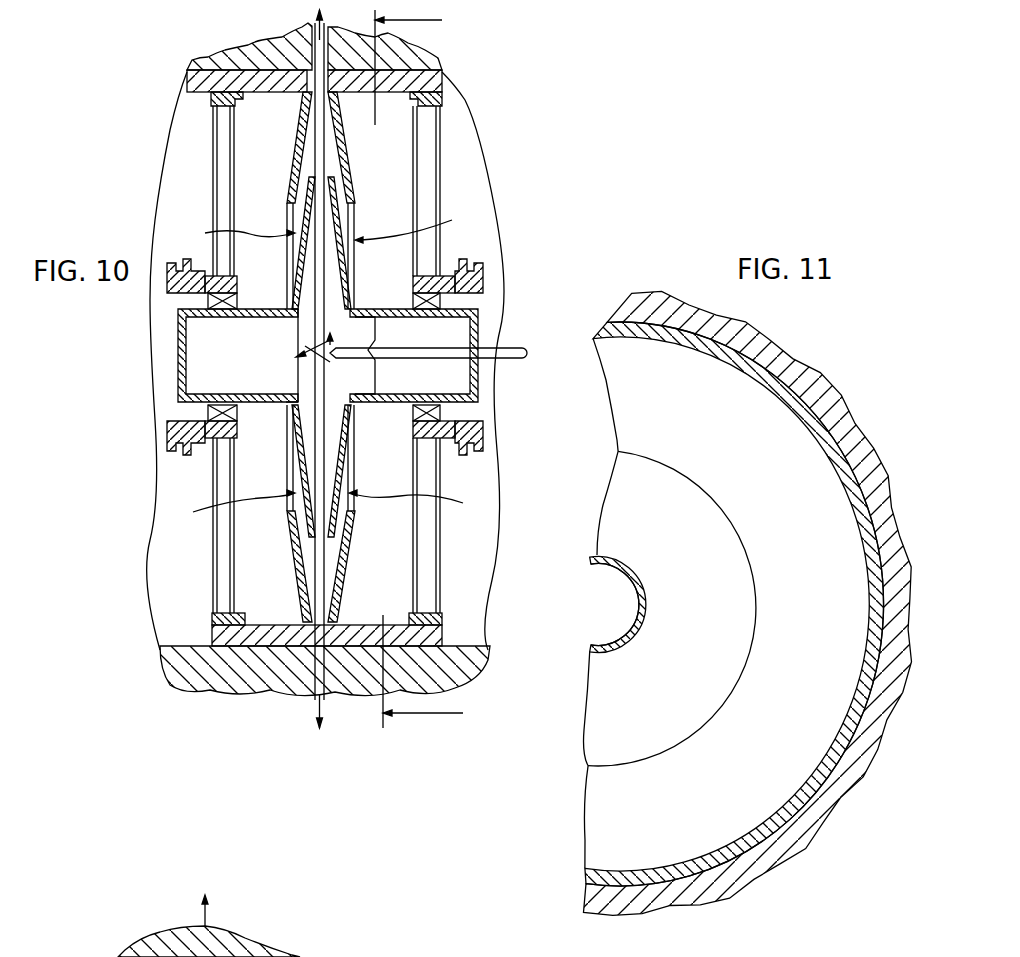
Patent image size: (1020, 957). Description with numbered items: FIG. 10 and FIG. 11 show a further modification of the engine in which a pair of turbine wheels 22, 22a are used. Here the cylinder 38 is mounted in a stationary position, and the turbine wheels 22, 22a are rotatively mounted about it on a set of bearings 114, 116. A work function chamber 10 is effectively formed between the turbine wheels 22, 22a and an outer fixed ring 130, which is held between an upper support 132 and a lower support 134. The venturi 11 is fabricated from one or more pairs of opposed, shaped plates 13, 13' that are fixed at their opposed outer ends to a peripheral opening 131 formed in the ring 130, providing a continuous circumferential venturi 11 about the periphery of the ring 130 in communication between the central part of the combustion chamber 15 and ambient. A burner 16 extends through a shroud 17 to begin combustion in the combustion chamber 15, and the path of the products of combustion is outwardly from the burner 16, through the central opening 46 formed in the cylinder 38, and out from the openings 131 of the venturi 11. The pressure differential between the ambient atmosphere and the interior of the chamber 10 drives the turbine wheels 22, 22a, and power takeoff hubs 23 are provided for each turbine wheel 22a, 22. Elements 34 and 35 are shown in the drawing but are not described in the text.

In FIG. 10, the work function chamber 10 is at (393, 209).
In FIG. 10, the venturi 11 is at (431, 371).
In FIG. 10, the shaped plate 13 is at (287, 357).
In FIG. 10, the shaped plate 13' is at (362, 357).
In FIG. 11, the shaped plate 13' is at (696, 604).
In FIG. 10, the combustion chamber 15 is at (228, 365).
In FIG. 11, the combustion chamber 15 is at (623, 624).
In FIG. 10, the burner means 16 is at (446, 336).
In FIG. 10, the shroud 17 is at (373, 368).
In FIG. 10, the turbine wheel 22 is at (446, 172).
In FIG. 10, the turbine wheel 22a is at (211, 168).
In FIG. 10, the power takeoff hub 23 is at (168, 454).
In FIG. 10, the end flange 34 is at (444, 636).
In FIG. 10, the retainer 35 is at (444, 616).
In FIG. 10, the cylinder 38 is at (265, 403).
In FIG. 11, the cylinder 38 is at (640, 565).
In FIG. 10, the central opening 46 is at (303, 344).
In FIG. 10, the bearing 114 is at (208, 300).
In FIG. 10, the bearing 116 is at (447, 300).
In FIG. 10, the outer fixed ring 130 is at (448, 80).
In FIG. 11, the outer fixed ring 130 is at (790, 410).
In FIG. 10, the peripheral opening 131 is at (312, 43).
In FIG. 10, the upper support 132 is at (233, 60).
In FIG. 11, the upper support 132 is at (812, 388).
In FIG. 10, the lower support 134 is at (252, 678).